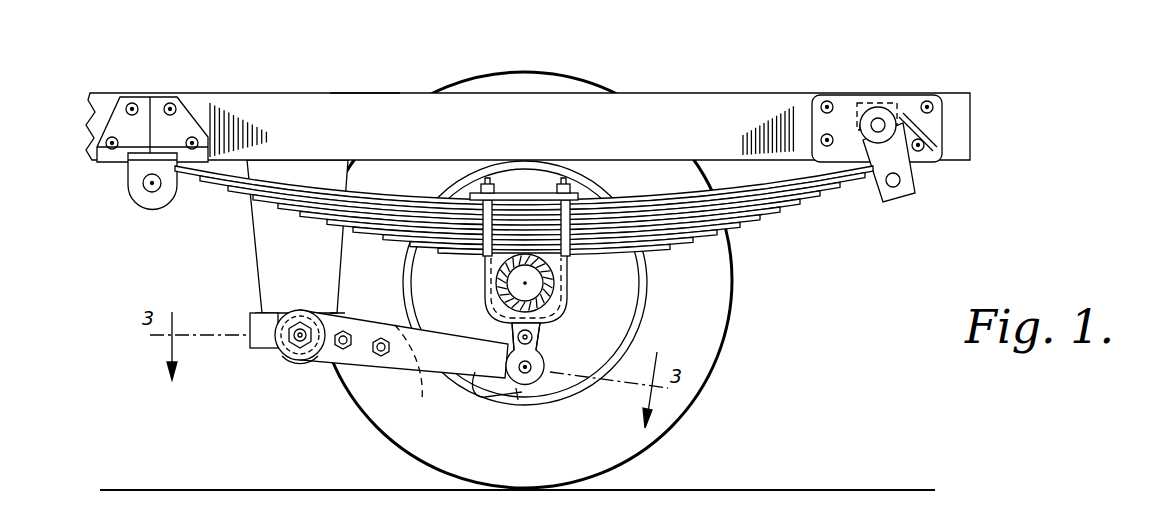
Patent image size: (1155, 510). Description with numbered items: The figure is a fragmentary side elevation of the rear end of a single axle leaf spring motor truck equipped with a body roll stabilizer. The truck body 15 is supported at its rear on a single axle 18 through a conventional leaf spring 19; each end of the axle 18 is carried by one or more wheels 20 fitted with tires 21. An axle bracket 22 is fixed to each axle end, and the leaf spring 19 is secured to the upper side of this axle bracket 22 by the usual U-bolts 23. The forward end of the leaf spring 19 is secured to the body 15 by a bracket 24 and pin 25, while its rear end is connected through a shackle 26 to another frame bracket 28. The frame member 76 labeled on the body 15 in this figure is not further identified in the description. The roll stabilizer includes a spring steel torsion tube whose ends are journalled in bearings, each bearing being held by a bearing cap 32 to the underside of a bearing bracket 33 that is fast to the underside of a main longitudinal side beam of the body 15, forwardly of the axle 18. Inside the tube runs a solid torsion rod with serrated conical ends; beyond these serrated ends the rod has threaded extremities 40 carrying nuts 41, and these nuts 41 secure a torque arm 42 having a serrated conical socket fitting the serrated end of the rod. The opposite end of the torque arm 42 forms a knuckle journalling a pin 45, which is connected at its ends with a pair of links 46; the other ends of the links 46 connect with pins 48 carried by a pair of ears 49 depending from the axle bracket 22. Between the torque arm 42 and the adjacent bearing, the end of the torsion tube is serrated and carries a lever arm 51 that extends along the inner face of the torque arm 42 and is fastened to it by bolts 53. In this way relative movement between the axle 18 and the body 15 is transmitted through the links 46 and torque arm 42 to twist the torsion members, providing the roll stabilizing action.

The truck body 15 is at (714, 90).
The frame side rail 76 is at (362, 112).
The axle 18 is at (500, 280).
The leaf spring 19 is at (765, 206).
The wheel 20 is at (645, 291).
The tire 21 is at (737, 318).
The axle bracket 22 is at (567, 272).
The U-bolt 23 is at (560, 172).
The bracket 24 is at (183, 118).
The pin 25 is at (150, 193).
The shackle 26 is at (904, 190).
The frame bracket 28 is at (905, 100).
The bearing cap 32 is at (292, 373).
The bearing bracket 33 is at (260, 261).
The threaded extremity 40 is at (279, 353).
The nut 41 is at (256, 321).
The torque arm 42 is at (478, 387).
The pin 45 is at (520, 399).
The link 46 is at (544, 355).
The pin 48 is at (511, 334).
The ear 49 is at (534, 336).
The lever arm 51 is at (418, 388).
The bolt 53 is at (346, 351).